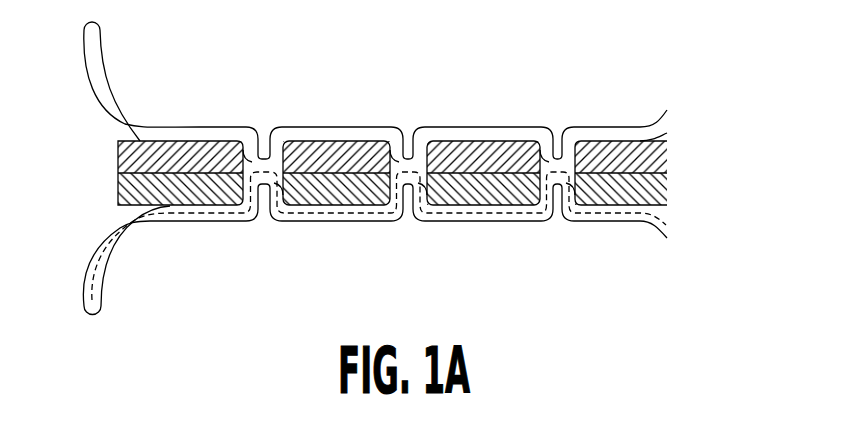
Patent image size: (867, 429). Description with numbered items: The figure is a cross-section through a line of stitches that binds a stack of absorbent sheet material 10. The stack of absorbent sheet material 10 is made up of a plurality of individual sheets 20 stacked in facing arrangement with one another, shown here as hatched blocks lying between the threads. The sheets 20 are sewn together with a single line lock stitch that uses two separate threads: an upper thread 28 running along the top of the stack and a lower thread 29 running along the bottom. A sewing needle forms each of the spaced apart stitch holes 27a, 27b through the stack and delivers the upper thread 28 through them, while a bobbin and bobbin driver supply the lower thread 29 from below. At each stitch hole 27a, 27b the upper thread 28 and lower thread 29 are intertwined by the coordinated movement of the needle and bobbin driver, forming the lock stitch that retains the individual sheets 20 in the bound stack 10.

The stack of absorbent sheet material 10 is at (421, 166).
The individual sheets 20 is at (667, 195).
The stitch hole 27a is at (409, 131).
The stitch hole 27b is at (555, 131).
The upper thread 28 is at (335, 127).
The lower thread 29 is at (318, 222).